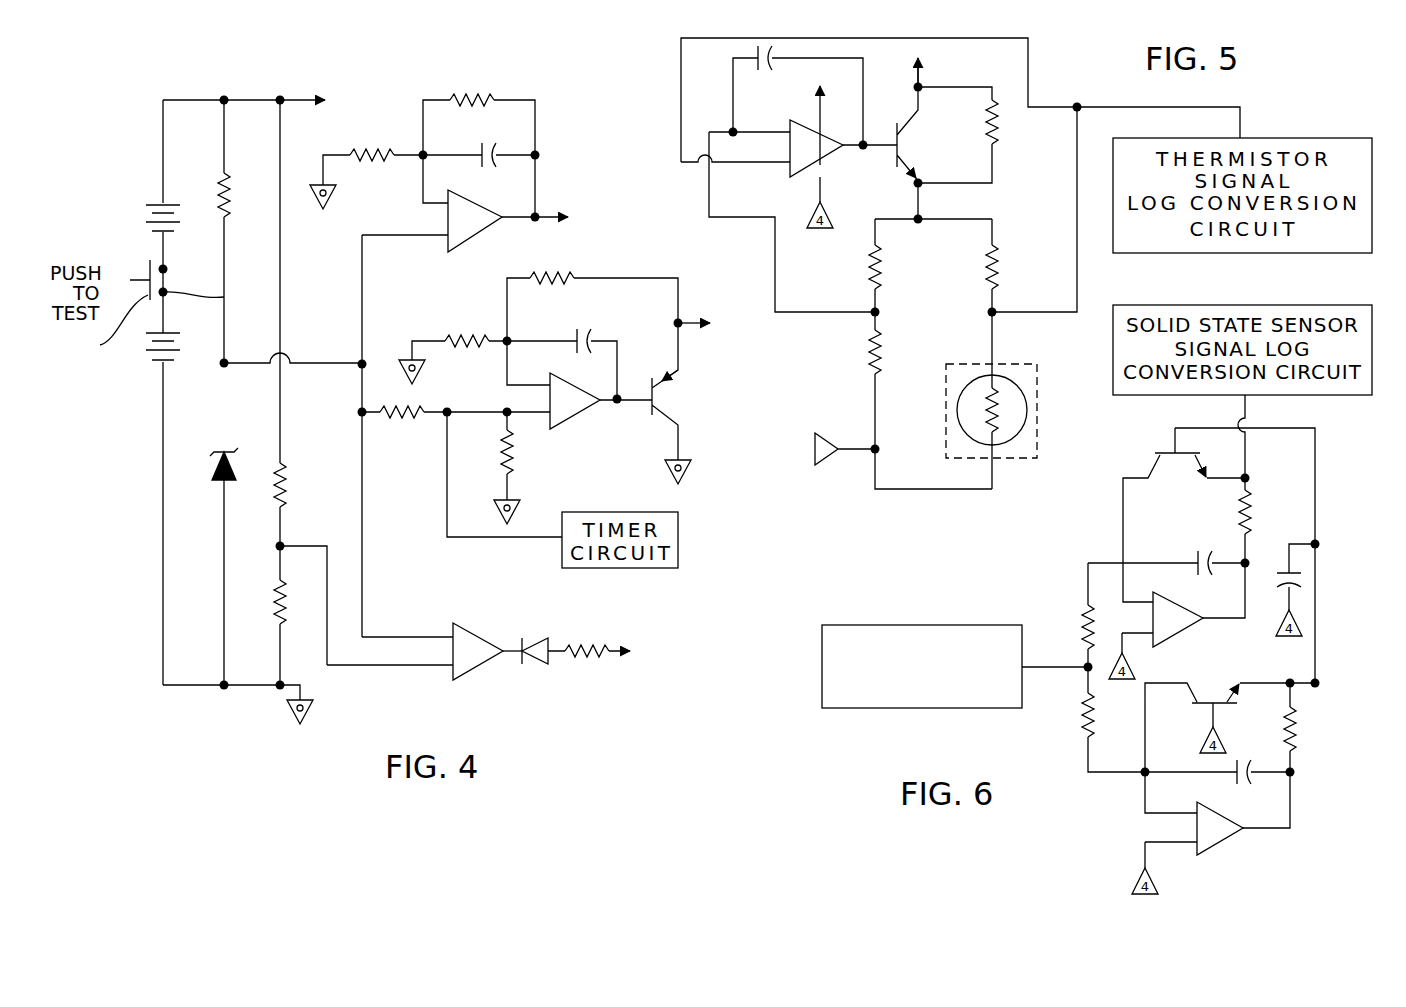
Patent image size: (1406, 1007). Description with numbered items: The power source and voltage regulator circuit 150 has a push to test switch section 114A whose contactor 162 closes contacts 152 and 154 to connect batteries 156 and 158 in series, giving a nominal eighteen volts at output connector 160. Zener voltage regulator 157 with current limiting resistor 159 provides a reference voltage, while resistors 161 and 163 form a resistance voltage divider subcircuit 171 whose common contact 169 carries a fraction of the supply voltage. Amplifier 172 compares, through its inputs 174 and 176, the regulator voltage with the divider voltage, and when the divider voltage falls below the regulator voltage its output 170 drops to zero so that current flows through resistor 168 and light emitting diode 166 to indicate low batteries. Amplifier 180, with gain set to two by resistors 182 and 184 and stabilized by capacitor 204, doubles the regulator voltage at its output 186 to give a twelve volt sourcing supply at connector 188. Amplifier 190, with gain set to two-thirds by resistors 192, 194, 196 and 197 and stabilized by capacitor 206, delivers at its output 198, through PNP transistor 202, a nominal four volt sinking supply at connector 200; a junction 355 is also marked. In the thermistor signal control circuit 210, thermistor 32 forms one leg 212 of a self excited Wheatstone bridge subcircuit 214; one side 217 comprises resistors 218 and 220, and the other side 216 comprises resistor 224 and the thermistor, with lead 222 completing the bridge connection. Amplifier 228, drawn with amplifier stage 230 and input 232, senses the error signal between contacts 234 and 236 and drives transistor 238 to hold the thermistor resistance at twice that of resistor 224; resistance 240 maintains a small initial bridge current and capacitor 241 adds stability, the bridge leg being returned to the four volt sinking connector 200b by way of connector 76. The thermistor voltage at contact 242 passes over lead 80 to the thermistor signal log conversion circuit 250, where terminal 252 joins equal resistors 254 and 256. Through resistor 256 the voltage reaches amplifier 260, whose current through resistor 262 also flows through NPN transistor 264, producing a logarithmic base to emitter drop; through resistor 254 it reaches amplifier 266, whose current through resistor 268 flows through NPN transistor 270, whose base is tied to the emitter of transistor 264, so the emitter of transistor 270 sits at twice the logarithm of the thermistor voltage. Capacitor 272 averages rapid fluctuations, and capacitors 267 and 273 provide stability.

In FIG. 4, the power source and voltage regulator circuit 150 is at (144, 106).
In FIG. 4, the output connector 160 is at (313, 99).
In FIG. 5, the output connector 160 is at (820, 118).
In FIG. 4, the battery 156 is at (184, 180).
In FIG. 4, the resistor 159 is at (242, 188).
In FIG. 4, the push to test switch section 114A is at (121, 238).
In FIG. 4, the contact 152 is at (168, 270).
In FIG. 4, the contact 154 is at (226, 297).
In FIG. 4, the contactor 162 is at (152, 358).
In FIG. 4, the battery 158 is at (137, 382).
In FIG. 4, the voltage regulator 157 is at (215, 488).
In FIG. 4, the resistor 161 is at (285, 487).
In FIG. 4, the common contact 169 is at (282, 545).
In FIG. 4, the resistor 163 is at (283, 607).
In FIG. 4, the resistance voltage divider subcircuit 171 is at (268, 655).
In FIG. 4, the resistor 182 is at (371, 154).
In FIG. 4, the resistor 184 is at (474, 100).
In FIG. 4, the capacitor 204 is at (511, 141).
In FIG. 4, the integrated circuit amplifier 180 is at (469, 246).
In FIG. 4, the power supply source connector 188 is at (552, 216).
In FIG. 4, the output 186 is at (503, 218).
In FIG. 4, the resistor 194 is at (573, 279).
In FIG. 4, the resistor 192 is at (465, 340).
In FIG. 4, the capacitor 206 is at (596, 331).
In FIG. 4, the integrated circuit amplifier 190 is at (578, 420).
In FIG. 4, the resistor 196 is at (421, 412).
In FIG. 4, the junction 355 is at (450, 410).
In FIG. 4, the resistor 197 is at (511, 456).
In FIG. 4, the sinking supply connector 200 is at (690, 322).
In FIG. 5, the sinking supply connector 200 is at (818, 232).
In FIG. 4, the bipolar transistor 202 is at (668, 398).
In FIG. 4, the amplifier output 198 is at (601, 403).
In FIG. 4, the integrated circuit amplifier 172 is at (471, 620).
In FIG. 4, the input 174 is at (453, 629).
In FIG. 4, the input 176 is at (453, 670).
In FIG. 4, the output 170 is at (522, 644).
In FIG. 4, the resistor 168 is at (596, 648).
In FIG. 4, the light emitting diode 166 is at (549, 665).
In FIG. 5, the capacitor 241 is at (771, 36).
In FIG. 5, the transistor 238 is at (957, 107).
In FIG. 5, the thermistor signal control circuit 210 is at (1060, 62).
In FIG. 5, the contact 242 is at (1080, 105).
In FIG. 5, the lead 80 is at (1222, 107).
In FIG. 6, the lead 80 is at (1052, 665).
In FIG. 5, the operational amplifier 230 is at (790, 165).
In FIG. 5, the amplifier input 232 is at (790, 128).
In FIG. 5, the integrated circuit amplifier 228 is at (843, 160).
In FIG. 5, the resistance 240 is at (997, 133).
In FIG. 5, the bridge side 216 is at (992, 218).
In FIG. 5, the resistor 218 is at (899, 270).
In FIG. 5, the resistor 224 is at (997, 246).
In FIG. 5, the lead 222 is at (1002, 286).
In FIG. 5, the contact 236 is at (995, 310).
In FIG. 5, the contact 234 is at (872, 310).
In FIG. 5, the resistor 220 is at (880, 350).
In FIG. 5, the bridge side 217 is at (873, 397).
In FIG. 5, the leg 212 is at (995, 345).
In FIG. 5, the thermistor 32 is at (1010, 470).
In FIG. 5, the Wheatstone bridge subcircuit 214 is at (908, 497).
In FIG. 5, the sinking supply connector 200b is at (826, 468).
In FIG. 5, the connector 76 is at (853, 452).
In FIG. 6, the thermistor signal log conversion circuit 250 is at (1340, 520).
In FIG. 6, the NPN transistor 270 is at (1154, 453).
In FIG. 6, the resistor 268 is at (1248, 510).
In FIG. 6, the capacitor 267 is at (1198, 548).
In FIG. 6, the integrated circuit amplifier 266 is at (1170, 600).
In FIG. 6, the capacitor 272 is at (1303, 578).
In FIG. 6, the NPN transistor 264 is at (1215, 700).
In FIG. 6, the resistor 262 is at (1295, 720).
In FIG. 6, the capacitor 273 is at (1255, 770).
In FIG. 6, the integrated circuit amplifier 260 is at (1226, 846).
In FIG. 6, the terminal 252 is at (1085, 668).
In FIG. 6, the resistor 254 is at (1085, 583).
In FIG. 6, the resistor 256 is at (1090, 722).